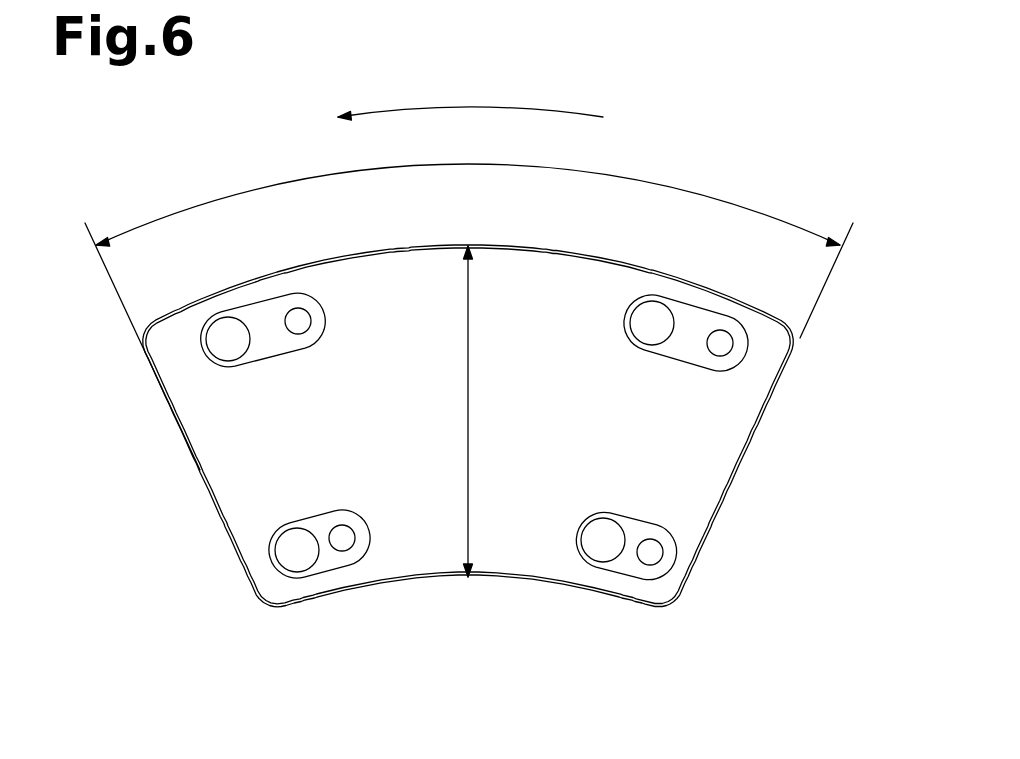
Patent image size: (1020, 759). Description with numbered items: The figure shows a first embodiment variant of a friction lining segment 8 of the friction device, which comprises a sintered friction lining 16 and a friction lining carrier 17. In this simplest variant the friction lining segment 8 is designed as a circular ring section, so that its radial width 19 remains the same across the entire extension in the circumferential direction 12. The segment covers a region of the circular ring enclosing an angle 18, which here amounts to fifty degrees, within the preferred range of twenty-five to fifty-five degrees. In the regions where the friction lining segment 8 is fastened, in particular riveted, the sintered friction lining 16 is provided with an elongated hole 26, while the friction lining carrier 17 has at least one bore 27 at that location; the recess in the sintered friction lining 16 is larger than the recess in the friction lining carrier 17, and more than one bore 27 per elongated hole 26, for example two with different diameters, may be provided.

The friction lining segment 8 is at (163, 167).
The circumferential direction 12 is at (465, 92).
The sintered friction lining 16 is at (377, 300).
The friction lining carrier 17 is at (763, 287).
The angle 18 is at (602, 158).
The radial width 19 is at (468, 403).
The elongated hole 26 is at (335, 563).
The bore 27 is at (298, 563).